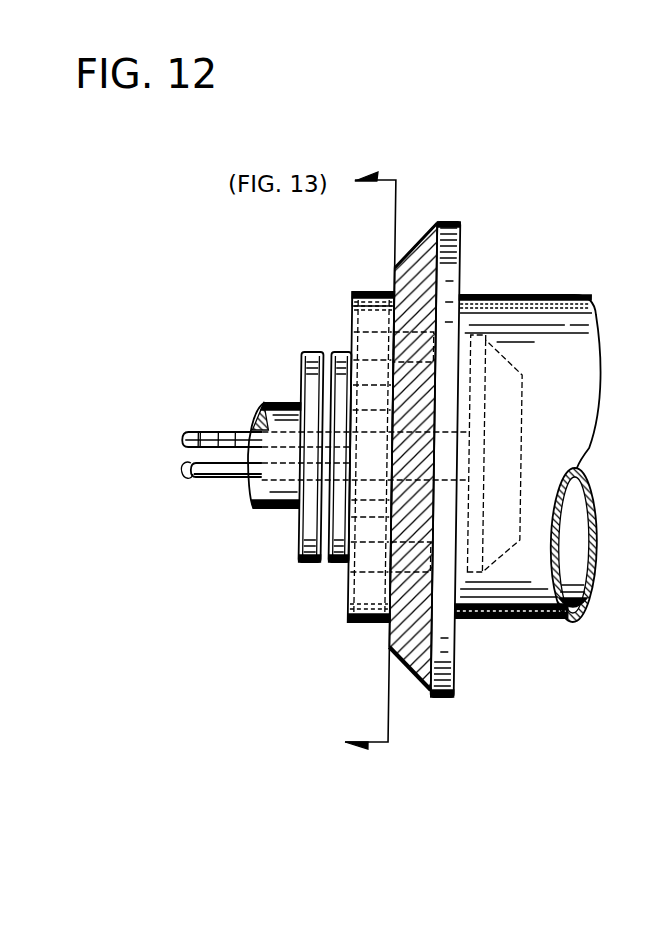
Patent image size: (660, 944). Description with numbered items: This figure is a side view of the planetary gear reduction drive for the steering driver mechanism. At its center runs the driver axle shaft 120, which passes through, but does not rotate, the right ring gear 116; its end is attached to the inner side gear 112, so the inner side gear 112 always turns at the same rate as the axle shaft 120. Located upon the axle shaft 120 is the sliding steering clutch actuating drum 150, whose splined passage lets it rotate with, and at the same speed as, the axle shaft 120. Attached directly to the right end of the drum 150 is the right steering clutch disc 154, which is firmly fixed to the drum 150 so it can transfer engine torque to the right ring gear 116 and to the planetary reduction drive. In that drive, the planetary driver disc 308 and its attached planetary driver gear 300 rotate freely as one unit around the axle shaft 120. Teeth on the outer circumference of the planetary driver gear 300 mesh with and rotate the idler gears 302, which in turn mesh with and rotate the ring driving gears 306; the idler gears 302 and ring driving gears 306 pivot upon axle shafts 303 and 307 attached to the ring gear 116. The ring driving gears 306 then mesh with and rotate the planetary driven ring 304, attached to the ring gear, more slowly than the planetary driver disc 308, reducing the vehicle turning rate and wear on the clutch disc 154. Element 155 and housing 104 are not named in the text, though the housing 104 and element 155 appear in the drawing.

The cylindrical housing 104 is at (461, 296).
The inner side gear 112 is at (500, 530).
The right ring gear 116 is at (440, 698).
The driver axle shaft 120 is at (180, 470).
The sliding steering clutch actuating drum 150 is at (255, 503).
The right steering clutch disc 154 is at (306, 566).
The pin end 155 is at (234, 430).
The planetary driver gear 300 is at (368, 428).
The idler gear 302 is at (372, 557).
The axle shaft 303 is at (356, 570).
The planetary driven ring 304 is at (366, 292).
The ring driving gear 306 is at (390, 318).
The axle shaft 307 is at (370, 343).
The planetary driver disc 308 is at (336, 567).